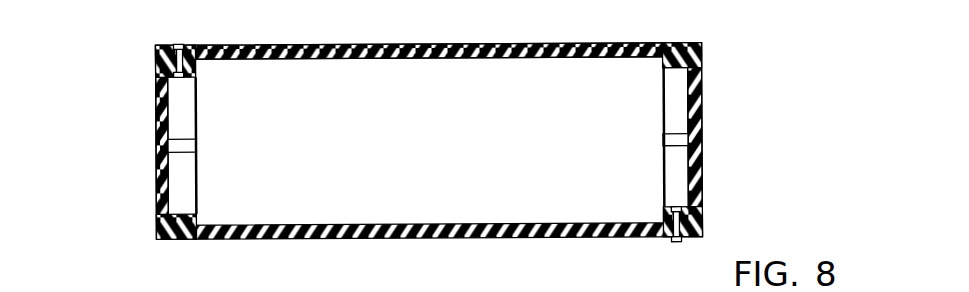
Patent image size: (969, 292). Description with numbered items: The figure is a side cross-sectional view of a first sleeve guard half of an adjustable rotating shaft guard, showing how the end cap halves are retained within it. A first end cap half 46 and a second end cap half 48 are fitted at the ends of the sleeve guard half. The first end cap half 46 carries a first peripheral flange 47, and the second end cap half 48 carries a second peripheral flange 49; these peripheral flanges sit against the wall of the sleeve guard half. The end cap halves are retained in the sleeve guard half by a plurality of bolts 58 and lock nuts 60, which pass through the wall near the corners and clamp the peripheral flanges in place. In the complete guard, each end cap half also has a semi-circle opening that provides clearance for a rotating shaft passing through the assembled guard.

The first end cap half 46 is at (157, 198).
The second end cap half 48 is at (157, 125).
The second peripheral flange 49 is at (218, 46).
The lock nut 60 is at (157, 70).
The first peripheral flange 47 is at (663, 218).
The bolt 58 is at (176, 44).